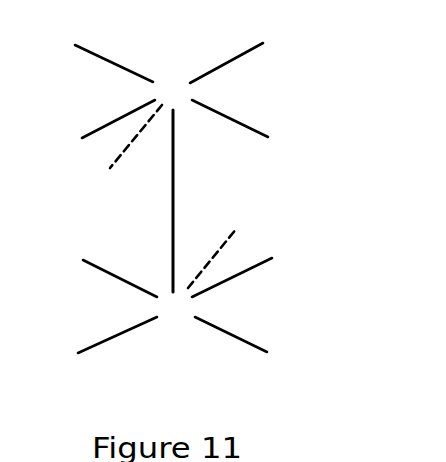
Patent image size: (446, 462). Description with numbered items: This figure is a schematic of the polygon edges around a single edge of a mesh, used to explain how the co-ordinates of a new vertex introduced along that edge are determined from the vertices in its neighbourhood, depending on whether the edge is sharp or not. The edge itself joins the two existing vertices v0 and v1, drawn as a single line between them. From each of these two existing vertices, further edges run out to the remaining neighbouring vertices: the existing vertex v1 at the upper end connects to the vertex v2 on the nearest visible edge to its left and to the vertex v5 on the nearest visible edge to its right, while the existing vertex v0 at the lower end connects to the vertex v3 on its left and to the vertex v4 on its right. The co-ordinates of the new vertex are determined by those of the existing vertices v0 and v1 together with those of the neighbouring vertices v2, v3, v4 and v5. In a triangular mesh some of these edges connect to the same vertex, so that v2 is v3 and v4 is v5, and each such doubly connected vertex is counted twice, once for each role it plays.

The existing vertex v0 is at (174, 310).
The existing vertex v1 is at (173, 97).
The neighbouring vertex v2 is at (105, 125).
The neighbouring vertex v3 is at (106, 277).
The neighbouring vertex v4 is at (247, 277).
The neighbouring vertex v5 is at (242, 126).